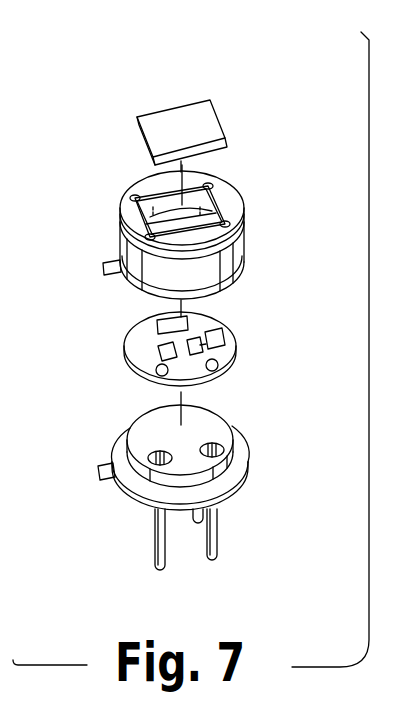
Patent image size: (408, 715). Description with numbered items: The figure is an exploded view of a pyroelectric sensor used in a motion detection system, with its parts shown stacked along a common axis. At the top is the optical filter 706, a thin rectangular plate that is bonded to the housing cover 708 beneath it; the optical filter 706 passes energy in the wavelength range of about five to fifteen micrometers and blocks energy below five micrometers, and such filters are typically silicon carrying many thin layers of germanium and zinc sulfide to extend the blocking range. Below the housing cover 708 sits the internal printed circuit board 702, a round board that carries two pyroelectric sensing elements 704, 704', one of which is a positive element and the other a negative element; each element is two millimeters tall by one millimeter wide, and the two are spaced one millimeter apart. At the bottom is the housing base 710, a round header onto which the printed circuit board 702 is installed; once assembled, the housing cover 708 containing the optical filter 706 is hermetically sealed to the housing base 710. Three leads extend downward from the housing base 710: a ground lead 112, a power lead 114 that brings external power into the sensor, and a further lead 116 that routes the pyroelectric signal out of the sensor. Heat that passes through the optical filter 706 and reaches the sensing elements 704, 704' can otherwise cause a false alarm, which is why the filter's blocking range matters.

The optical filter 706 is at (190, 117).
The housing cover 708 is at (110, 200).
The internal printed circuit board 702 is at (106, 347).
The pyroelectric sensing element 704 is at (247, 324).
The pyroelectric sensing element 704' is at (112, 371).
The housing base 710 is at (254, 446).
The ground lead 112 is at (207, 513).
The power lead 114 is at (157, 540).
The lead 116 is at (217, 548).